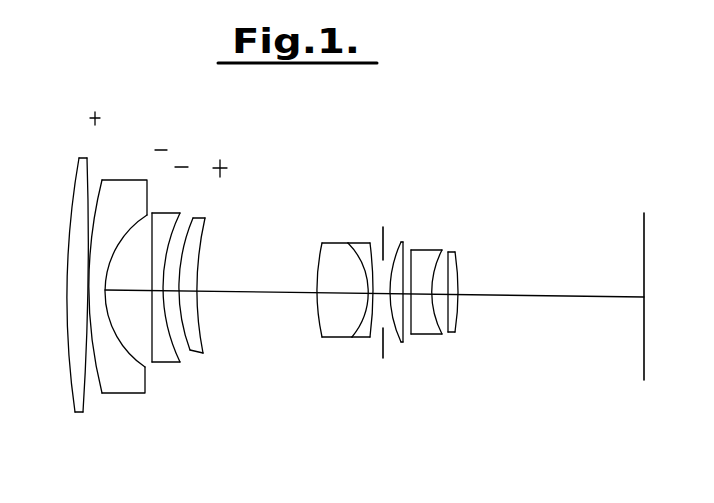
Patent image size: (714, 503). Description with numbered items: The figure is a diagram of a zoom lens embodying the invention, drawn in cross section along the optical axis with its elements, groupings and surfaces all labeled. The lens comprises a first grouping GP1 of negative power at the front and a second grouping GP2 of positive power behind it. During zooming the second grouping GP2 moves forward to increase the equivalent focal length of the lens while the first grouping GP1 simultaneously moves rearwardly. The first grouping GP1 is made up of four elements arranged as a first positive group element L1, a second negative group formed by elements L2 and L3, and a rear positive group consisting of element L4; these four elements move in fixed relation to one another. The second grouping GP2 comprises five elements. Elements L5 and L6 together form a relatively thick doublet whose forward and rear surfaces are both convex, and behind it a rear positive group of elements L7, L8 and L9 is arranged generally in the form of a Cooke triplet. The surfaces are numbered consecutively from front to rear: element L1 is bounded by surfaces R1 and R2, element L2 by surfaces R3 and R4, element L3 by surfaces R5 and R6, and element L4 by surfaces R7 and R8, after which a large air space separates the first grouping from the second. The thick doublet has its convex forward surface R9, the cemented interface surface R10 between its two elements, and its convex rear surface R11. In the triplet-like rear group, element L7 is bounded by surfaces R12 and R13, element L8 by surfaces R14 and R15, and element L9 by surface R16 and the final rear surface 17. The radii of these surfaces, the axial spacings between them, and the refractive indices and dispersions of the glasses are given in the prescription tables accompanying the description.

The first grouping GP1 is at (220, 147).
The second grouping GP2 is at (460, 153).
The first positive group element L1 is at (71, 289).
The second negative group element L2 is at (118, 287).
The second negative group element L3 is at (150, 286).
The rear positive group element L4 is at (209, 290).
The doublet element L5 is at (319, 278).
The doublet element L6 is at (354, 284).
The rear positive group element L7 is at (404, 302).
The rear positive group element L8 is at (452, 299).
The rear positive group element L9 is at (479, 270).
The lens surface R1 is at (73, 407).
The lens surface R2 is at (85, 400).
The lens surface R3 is at (97, 383).
The lens surface R4 is at (122, 323).
The lens surface R5 is at (150, 306).
The lens surface R6 is at (176, 340).
The lens surface R7 is at (190, 346).
The lens surface R8 is at (203, 329).
The lens surface R9 is at (318, 328).
The lens surface R10 is at (367, 307).
The lens surface R11 is at (372, 327).
The lens surface R12 is at (395, 335).
The lens surface R13 is at (405, 342).
The lens surface R14 is at (412, 318).
The lens surface R15 is at (442, 320).
The lens surface R16 is at (450, 315).
The rear lens surface 17 is at (455, 287).